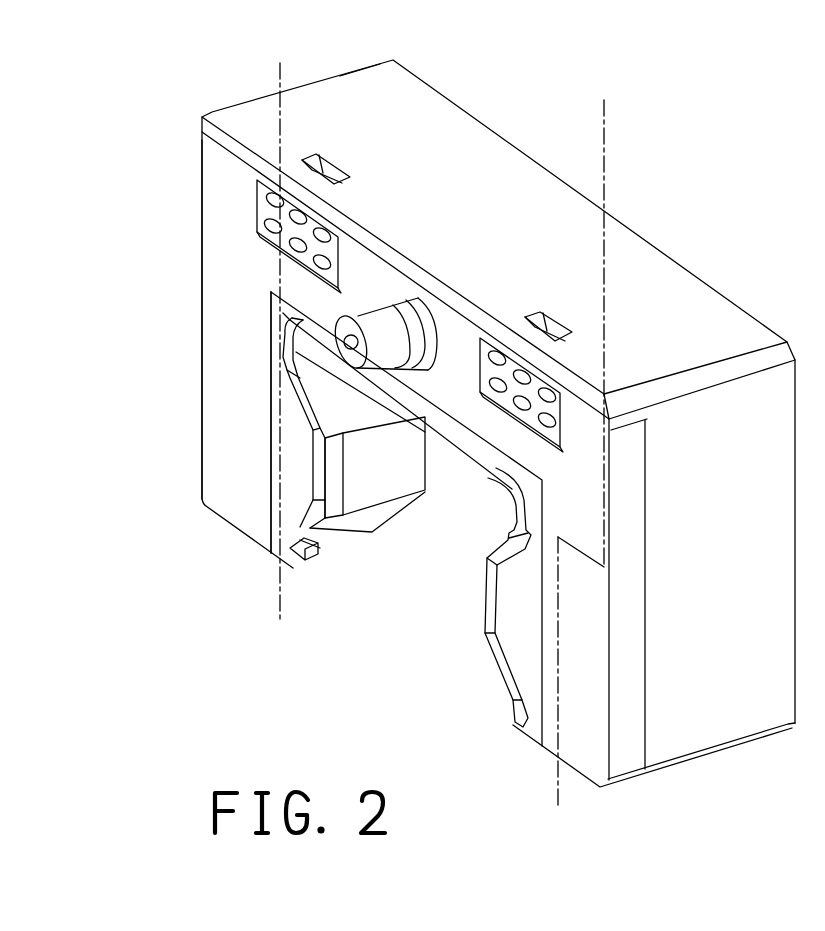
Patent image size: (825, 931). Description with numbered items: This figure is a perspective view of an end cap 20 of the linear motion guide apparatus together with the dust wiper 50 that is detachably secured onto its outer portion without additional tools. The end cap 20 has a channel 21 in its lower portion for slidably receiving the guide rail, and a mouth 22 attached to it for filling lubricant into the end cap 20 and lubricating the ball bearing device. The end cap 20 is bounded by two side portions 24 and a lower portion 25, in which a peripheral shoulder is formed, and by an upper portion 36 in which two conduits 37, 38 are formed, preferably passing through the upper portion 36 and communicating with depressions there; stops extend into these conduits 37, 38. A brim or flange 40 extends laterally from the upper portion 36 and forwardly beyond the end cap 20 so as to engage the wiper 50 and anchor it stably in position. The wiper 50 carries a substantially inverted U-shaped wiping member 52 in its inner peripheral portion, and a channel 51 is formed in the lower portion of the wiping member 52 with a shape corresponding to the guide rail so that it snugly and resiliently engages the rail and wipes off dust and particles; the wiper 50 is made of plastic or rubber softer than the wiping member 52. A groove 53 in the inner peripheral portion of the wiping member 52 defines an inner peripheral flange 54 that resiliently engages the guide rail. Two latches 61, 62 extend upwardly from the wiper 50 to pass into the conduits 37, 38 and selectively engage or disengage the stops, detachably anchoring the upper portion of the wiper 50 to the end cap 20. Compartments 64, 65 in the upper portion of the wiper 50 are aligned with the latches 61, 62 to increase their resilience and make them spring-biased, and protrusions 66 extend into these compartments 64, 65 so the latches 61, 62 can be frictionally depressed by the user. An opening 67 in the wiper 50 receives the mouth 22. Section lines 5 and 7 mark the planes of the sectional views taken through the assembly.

The end cap 20 is at (705, 276).
The channel 21 is at (350, 545).
The mouth 22 is at (385, 322).
The side portion 24 is at (650, 740).
The lower portion 25 is at (728, 753).
The upper portion 36 is at (363, 71).
The conduit 37 is at (336, 169).
The conduit 38 is at (556, 317).
The flange 40 is at (199, 115).
The wiper 50 is at (199, 402).
The channel 51 is at (305, 573).
The wiping member 52 is at (516, 648).
The groove 53 is at (292, 327).
The inner peripheral flange 54 is at (484, 621).
The latch 61 is at (322, 155).
The latch 62 is at (549, 316).
The compartment 64 is at (255, 218).
The compartment 65 is at (526, 428).
The protrusions 66 is at (270, 196).
The opening 67 is at (298, 298).
The section line 5- 5 is at (604, 100).
The section line 7- 7 is at (280, 63).